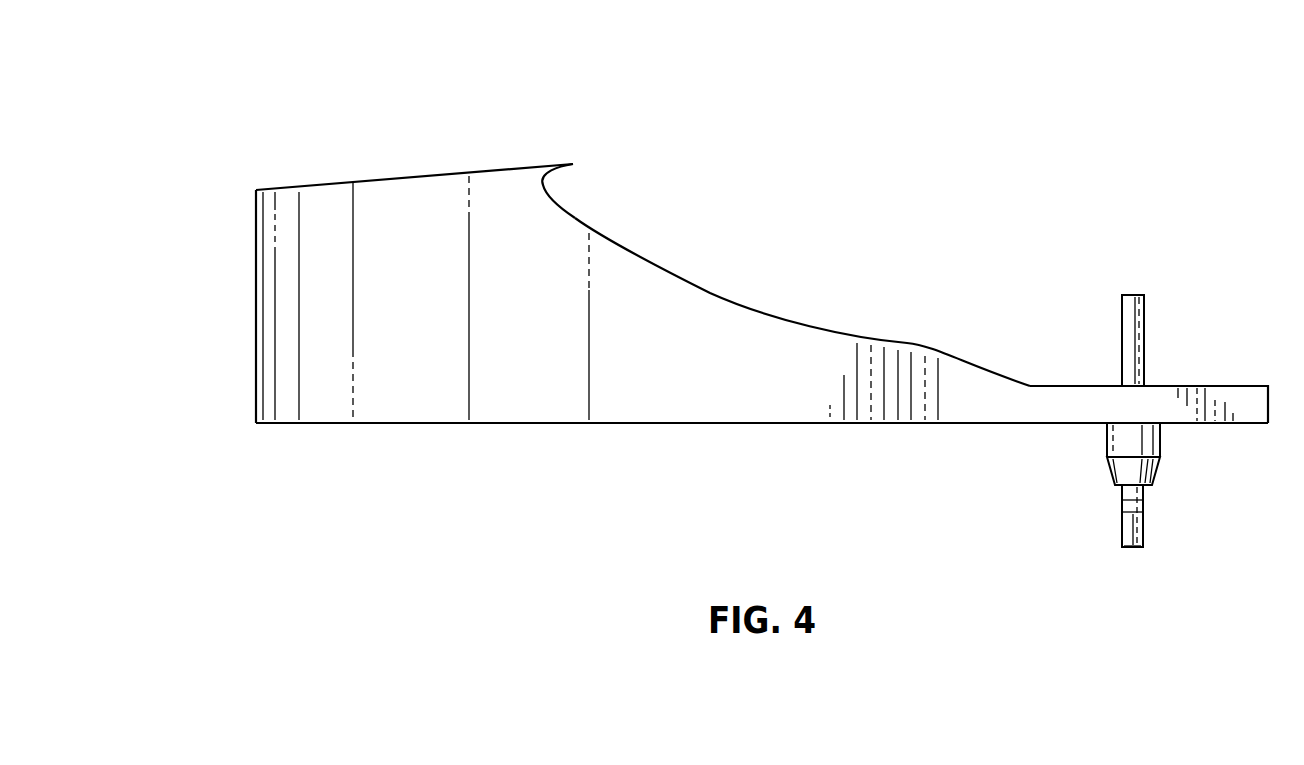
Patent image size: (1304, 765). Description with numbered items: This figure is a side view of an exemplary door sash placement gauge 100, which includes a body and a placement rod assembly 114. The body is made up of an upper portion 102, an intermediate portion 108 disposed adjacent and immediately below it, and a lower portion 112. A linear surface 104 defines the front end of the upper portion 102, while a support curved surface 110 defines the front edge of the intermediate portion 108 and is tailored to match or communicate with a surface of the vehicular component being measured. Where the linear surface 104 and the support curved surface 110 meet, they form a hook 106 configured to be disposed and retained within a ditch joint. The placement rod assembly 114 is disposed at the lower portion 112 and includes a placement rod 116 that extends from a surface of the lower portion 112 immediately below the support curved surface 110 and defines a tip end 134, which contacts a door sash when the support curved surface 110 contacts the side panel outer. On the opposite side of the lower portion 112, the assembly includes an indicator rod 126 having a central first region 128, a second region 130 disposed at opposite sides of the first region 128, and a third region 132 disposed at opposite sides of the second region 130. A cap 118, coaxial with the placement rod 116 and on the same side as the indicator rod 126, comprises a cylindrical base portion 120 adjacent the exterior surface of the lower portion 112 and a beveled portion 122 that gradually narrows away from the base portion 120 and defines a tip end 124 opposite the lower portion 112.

The door sash placement gauge 100 is at (910, 126).
The upper portion 102 is at (287, 325).
The linear surface 104 is at (408, 175).
The hook 106 is at (568, 165).
The intermediate portion 108 is at (700, 377).
The support curved surface 110 is at (710, 293).
The lower portion 112 is at (1072, 407).
The placement rod assembly 114 is at (1166, 311).
The placement rod 116 is at (1135, 350).
The cap 118 is at (1080, 443).
The cylindrical base portion 120 is at (1160, 433).
The beveled portion 122 is at (1157, 470).
The tip end 124 is at (1150, 487).
The indicator rod 126 is at (1133, 570).
The first region 128 is at (1120, 493).
The second region 130 is at (1120, 510).
The third region 132 is at (1122, 528).
The tip end 134 is at (1133, 295).